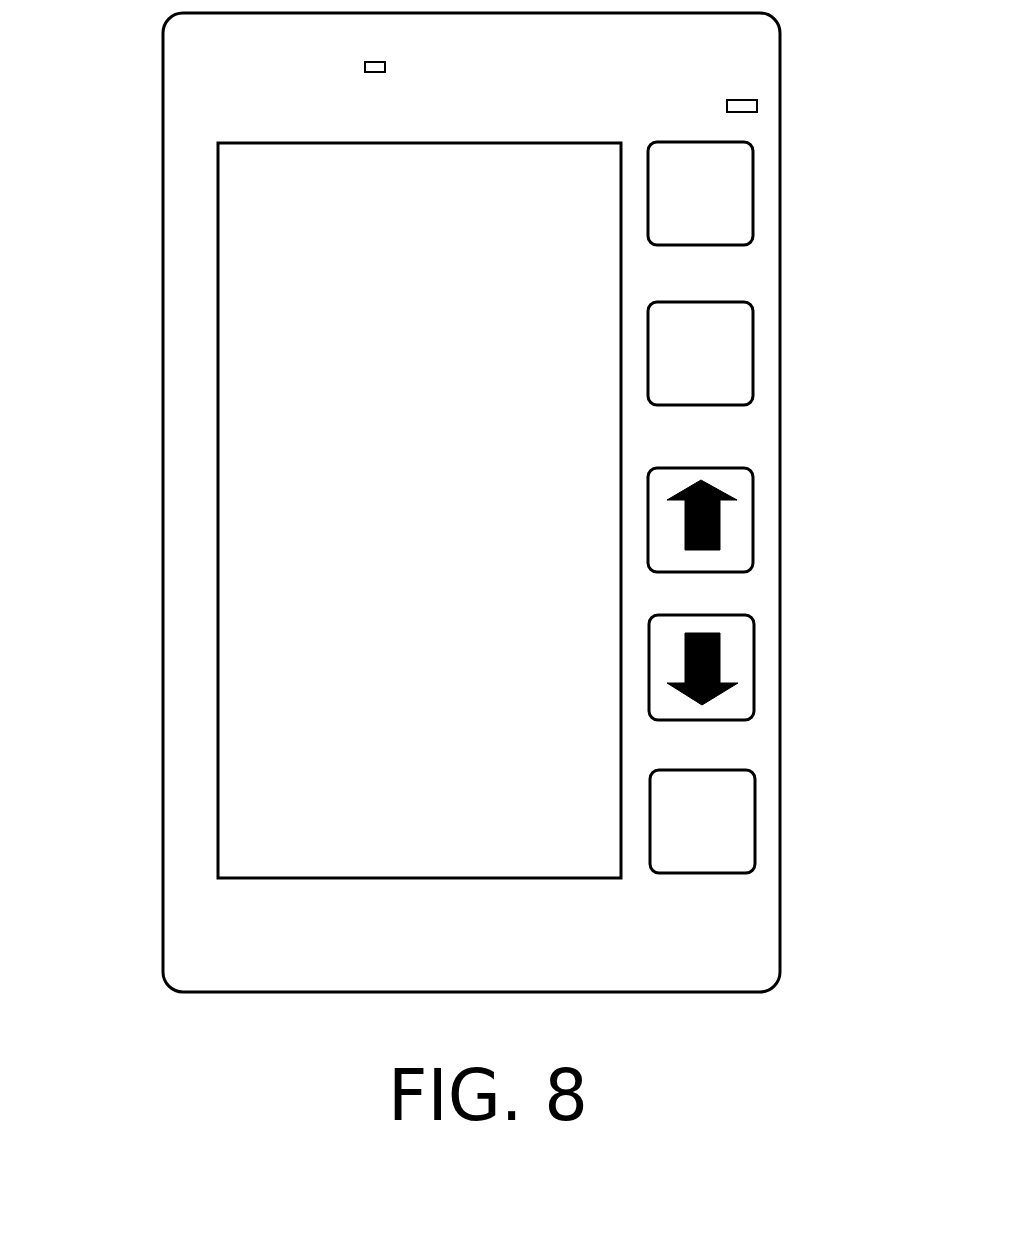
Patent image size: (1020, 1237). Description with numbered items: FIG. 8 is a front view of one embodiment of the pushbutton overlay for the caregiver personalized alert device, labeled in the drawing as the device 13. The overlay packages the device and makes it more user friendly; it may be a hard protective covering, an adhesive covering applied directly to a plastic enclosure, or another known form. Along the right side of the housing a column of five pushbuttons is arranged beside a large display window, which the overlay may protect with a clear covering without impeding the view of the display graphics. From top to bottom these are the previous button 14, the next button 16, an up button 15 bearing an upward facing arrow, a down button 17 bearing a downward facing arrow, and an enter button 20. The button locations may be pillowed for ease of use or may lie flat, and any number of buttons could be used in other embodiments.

The caregiver personalized alert device housing 13 is at (163, 345).
The previous button 14 is at (753, 190).
The up arrow button 15 is at (753, 517).
The next button 16 is at (753, 350).
The down button 17 is at (755, 665).
The enter button 20 is at (755, 818).